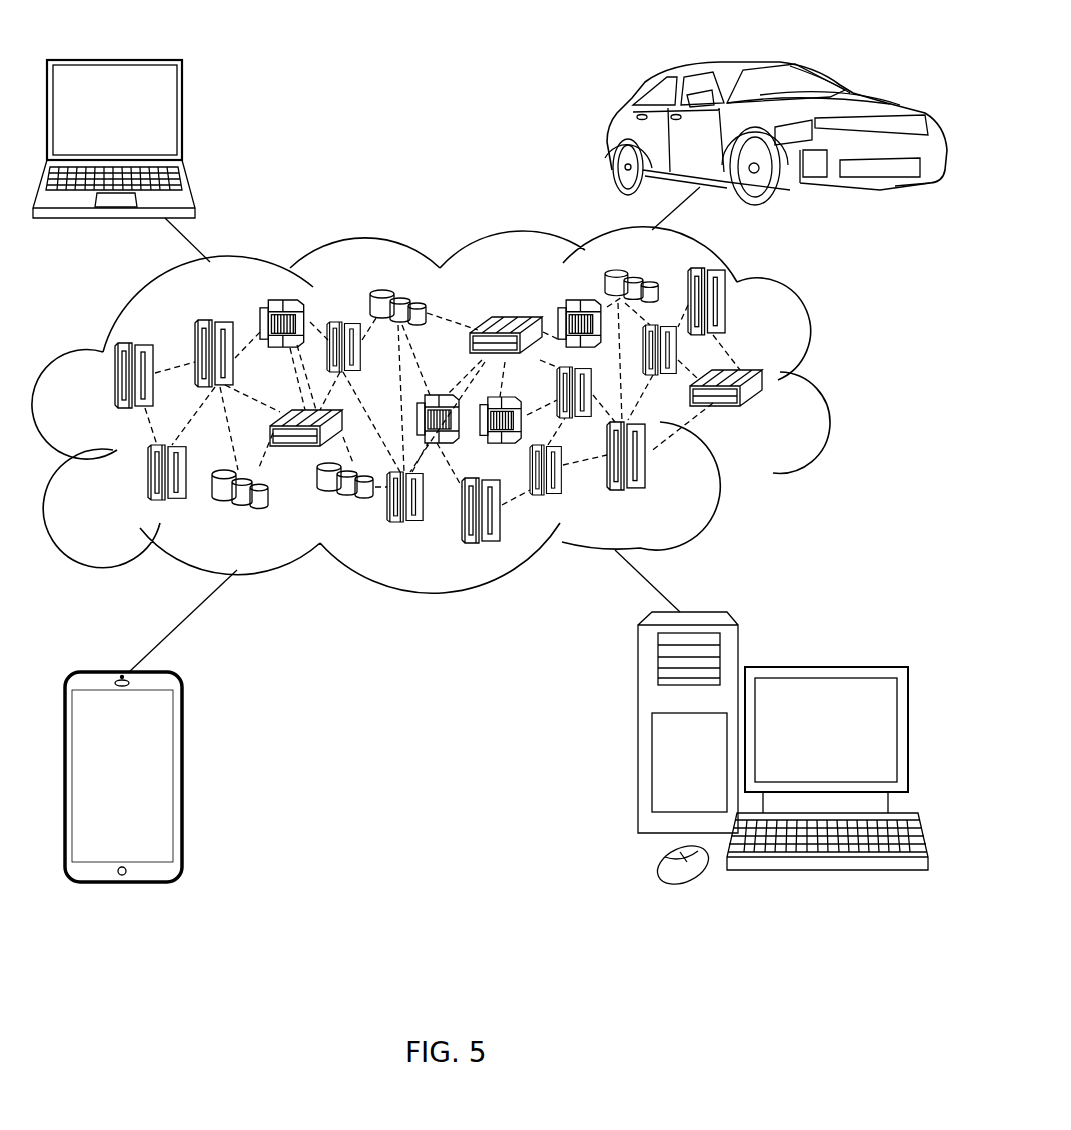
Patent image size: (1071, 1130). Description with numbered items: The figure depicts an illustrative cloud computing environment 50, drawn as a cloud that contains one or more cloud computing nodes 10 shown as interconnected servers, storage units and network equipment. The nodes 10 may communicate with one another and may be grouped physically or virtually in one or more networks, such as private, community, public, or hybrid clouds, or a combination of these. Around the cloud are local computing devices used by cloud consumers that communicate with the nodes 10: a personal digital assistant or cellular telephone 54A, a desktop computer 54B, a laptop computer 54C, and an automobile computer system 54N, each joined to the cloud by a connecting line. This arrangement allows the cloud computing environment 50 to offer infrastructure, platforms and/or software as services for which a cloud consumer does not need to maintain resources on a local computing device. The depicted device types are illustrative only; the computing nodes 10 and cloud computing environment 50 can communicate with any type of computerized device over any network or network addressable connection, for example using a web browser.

The cloud computing node 10 is at (772, 416).
The cloud computing environment 50 is at (827, 385).
The personal digital assistant or cellular telephone 54A is at (182, 766).
The desktop computer 54B is at (823, 667).
The laptop computer 54C is at (182, 118).
The automobile computer system 54N is at (609, 136).